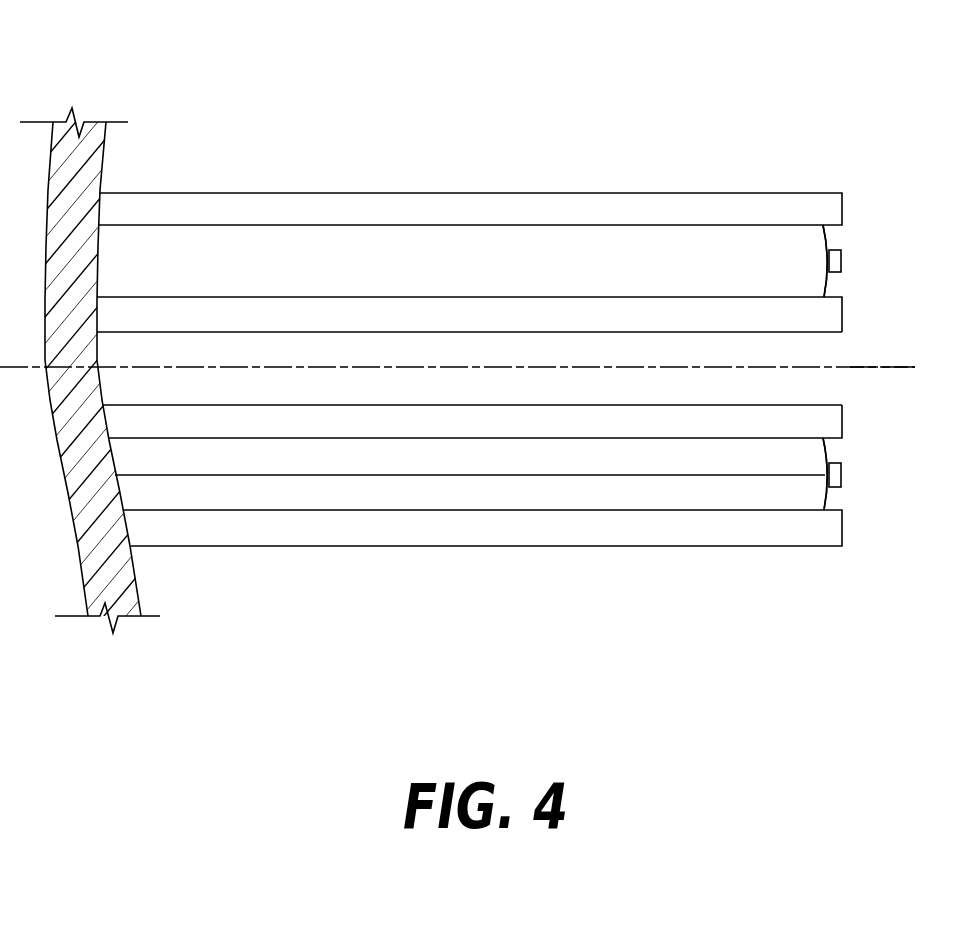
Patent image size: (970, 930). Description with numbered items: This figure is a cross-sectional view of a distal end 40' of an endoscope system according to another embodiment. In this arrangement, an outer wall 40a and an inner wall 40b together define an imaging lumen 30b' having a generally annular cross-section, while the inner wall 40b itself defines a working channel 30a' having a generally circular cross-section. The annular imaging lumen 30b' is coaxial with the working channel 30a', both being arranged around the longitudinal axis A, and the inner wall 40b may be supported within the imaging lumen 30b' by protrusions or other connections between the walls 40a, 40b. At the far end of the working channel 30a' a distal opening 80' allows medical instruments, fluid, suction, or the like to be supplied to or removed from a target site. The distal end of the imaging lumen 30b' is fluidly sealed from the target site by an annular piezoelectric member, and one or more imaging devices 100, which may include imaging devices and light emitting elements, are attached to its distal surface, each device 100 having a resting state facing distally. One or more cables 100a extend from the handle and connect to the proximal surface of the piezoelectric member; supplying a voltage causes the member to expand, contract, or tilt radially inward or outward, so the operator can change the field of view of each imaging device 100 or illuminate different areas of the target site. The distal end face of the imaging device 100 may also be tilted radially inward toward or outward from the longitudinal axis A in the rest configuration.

The distal end 40' is at (482, 57).
The outer wall 40a is at (497, 205).
The inner wall 40b is at (341, 418).
The working channel 30a' is at (469, 269).
The imaging lumen 30b' is at (733, 385).
The cable 100a is at (334, 475).
The imaging device 100 is at (836, 262).
The distal opening 80' is at (478, 336).
The longitudinal axis A is at (907, 368).